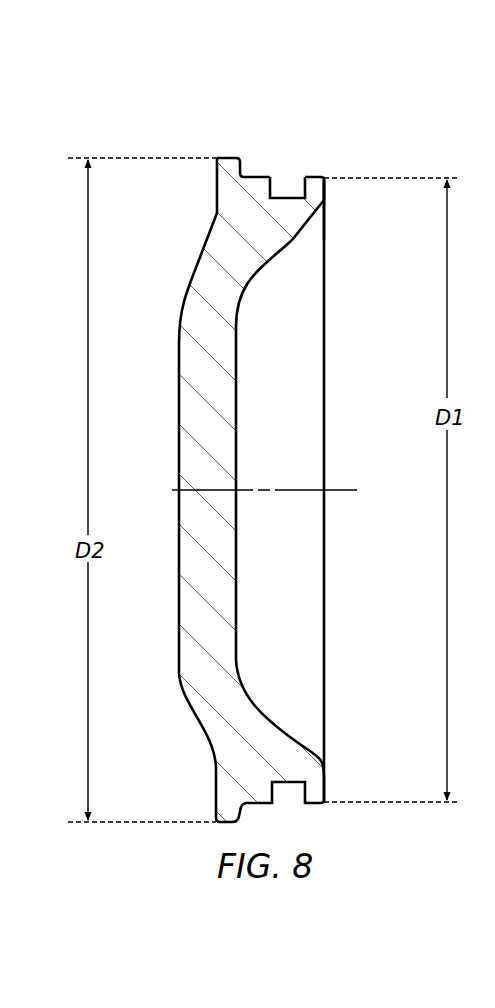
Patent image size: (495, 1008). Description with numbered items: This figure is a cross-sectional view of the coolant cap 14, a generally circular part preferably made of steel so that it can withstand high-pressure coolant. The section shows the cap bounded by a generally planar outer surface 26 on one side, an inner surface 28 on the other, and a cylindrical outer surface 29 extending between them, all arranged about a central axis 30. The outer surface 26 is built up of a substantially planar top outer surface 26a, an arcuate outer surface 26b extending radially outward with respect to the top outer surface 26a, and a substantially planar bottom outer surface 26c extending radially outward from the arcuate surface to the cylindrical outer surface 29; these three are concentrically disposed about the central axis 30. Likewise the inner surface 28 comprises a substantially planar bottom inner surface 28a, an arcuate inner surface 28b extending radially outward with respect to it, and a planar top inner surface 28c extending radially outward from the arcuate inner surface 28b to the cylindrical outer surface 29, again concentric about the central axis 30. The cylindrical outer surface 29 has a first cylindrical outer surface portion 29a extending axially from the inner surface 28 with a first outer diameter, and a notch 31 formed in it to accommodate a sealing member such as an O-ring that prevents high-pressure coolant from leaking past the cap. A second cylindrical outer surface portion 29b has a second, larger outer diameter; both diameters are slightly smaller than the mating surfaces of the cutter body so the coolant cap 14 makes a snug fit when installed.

The coolant cap 14 is at (128, 115).
The outer surface 26 is at (148, 471).
The top outer surface 26a is at (179, 373).
The arcuate outer surface 26b is at (202, 255).
The bottom outer surface 26c is at (217, 183).
The inner surface 28 is at (251, 423).
The bottom inner surface 28a is at (236, 358).
The arcuate inner surface 28b is at (283, 254).
The top inner surface 28c is at (325, 193).
The cylindrical outer surface 29 is at (268, 133).
The first cylindrical outer surface portion 29a is at (313, 176).
The second cylindrical outer surface portion 29b is at (227, 158).
The central axis 30 is at (340, 490).
The notch 31 is at (287, 194).